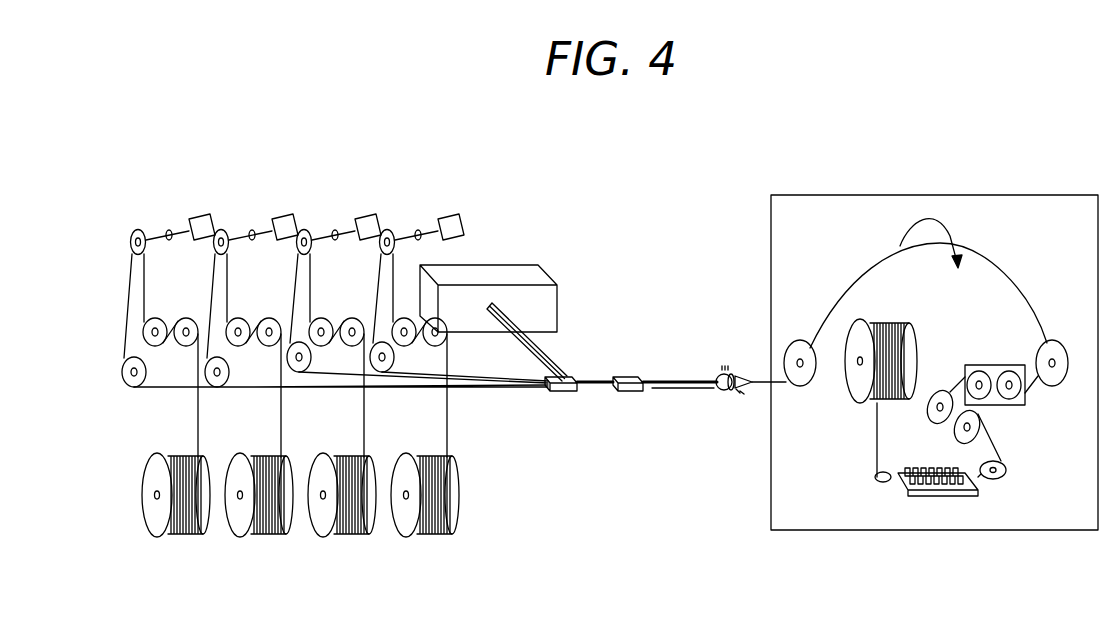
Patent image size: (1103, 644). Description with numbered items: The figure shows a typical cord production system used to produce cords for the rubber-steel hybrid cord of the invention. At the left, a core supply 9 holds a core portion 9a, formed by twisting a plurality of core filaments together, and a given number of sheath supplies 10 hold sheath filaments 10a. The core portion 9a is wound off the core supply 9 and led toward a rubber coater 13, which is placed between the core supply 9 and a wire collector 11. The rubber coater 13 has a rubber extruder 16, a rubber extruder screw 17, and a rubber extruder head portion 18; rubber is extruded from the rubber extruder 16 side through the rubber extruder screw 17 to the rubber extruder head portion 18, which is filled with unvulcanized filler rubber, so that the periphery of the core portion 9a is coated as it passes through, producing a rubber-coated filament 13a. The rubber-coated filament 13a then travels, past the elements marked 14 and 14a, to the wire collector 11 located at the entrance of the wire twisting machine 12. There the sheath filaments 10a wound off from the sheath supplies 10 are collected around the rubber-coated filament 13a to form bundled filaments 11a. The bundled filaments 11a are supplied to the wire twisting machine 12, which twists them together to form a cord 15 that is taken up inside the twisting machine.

The core supply 9 is at (425, 504).
The core portion 9a is at (446, 428).
The sheath supplies 10 is at (261, 504).
The sheath filaments 10a is at (363, 428).
The wire collector 11 is at (718, 373).
The bundled filaments 11a is at (743, 375).
The wire twisting machine 12 is at (934, 394).
The rubber coater 13 is at (530, 328).
The rubber-coated filament 13a is at (592, 378).
The yarn guide 14 is at (628, 376).
The guided yarn 14a is at (684, 385).
The cord 15 is at (880, 322).
The rubber extruder 16 is at (497, 270).
The rubber extruder screw 17 is at (528, 351).
The rubber extruder head portion 18 is at (568, 393).